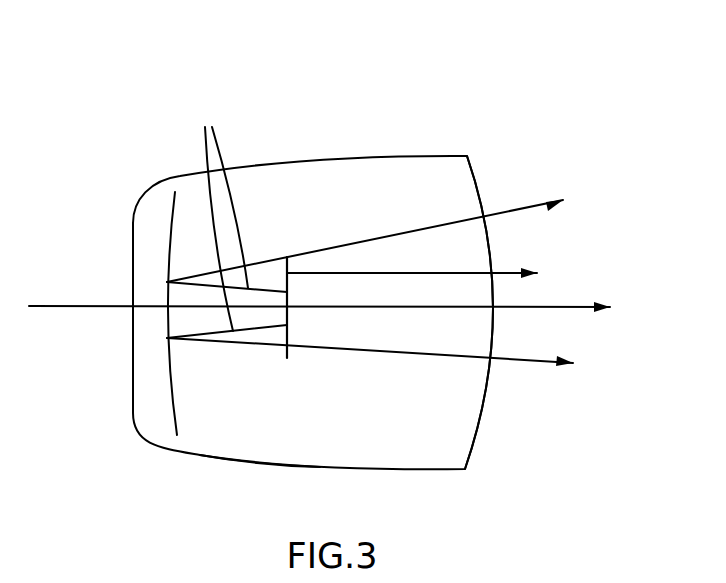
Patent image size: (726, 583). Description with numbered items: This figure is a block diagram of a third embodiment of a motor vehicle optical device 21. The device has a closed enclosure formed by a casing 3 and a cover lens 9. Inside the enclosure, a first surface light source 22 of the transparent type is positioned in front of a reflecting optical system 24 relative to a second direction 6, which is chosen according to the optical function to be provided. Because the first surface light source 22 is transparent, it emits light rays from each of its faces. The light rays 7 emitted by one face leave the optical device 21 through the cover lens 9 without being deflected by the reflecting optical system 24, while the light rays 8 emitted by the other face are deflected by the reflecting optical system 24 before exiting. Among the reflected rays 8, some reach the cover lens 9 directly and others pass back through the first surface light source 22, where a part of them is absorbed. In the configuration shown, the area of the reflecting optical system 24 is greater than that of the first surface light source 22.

The optical device 21 is at (490, 118).
The casing 3 is at (218, 460).
The cover lens 9 is at (477, 443).
The reflecting optical system 24 is at (167, 237).
The first surface light source 22 is at (290, 340).
The light rays 7 is at (583, 226).
The light rays 8 is at (505, 208).
The second direction 6 is at (578, 305).